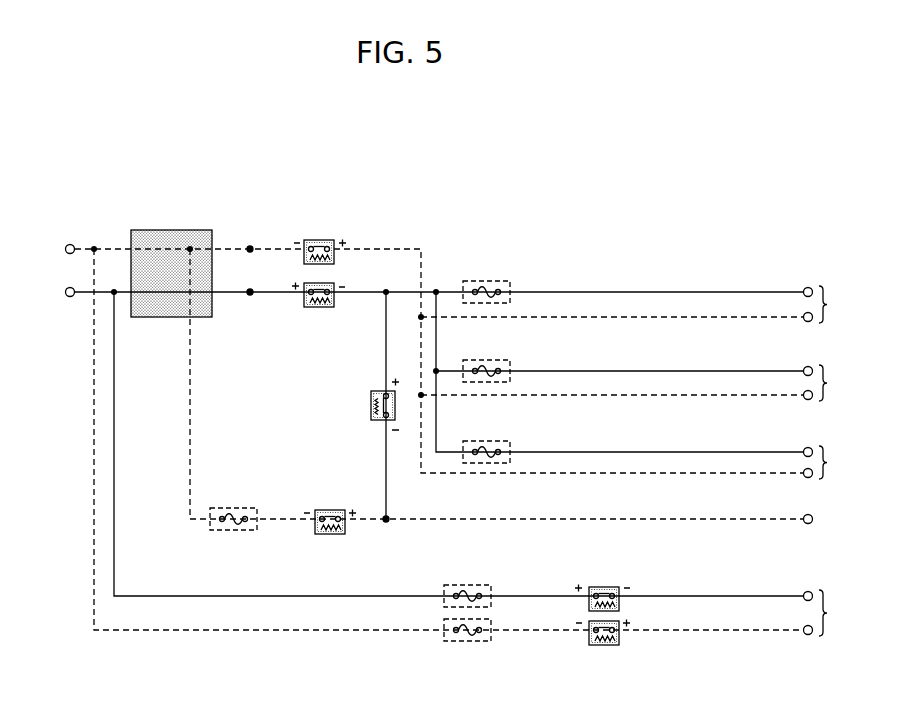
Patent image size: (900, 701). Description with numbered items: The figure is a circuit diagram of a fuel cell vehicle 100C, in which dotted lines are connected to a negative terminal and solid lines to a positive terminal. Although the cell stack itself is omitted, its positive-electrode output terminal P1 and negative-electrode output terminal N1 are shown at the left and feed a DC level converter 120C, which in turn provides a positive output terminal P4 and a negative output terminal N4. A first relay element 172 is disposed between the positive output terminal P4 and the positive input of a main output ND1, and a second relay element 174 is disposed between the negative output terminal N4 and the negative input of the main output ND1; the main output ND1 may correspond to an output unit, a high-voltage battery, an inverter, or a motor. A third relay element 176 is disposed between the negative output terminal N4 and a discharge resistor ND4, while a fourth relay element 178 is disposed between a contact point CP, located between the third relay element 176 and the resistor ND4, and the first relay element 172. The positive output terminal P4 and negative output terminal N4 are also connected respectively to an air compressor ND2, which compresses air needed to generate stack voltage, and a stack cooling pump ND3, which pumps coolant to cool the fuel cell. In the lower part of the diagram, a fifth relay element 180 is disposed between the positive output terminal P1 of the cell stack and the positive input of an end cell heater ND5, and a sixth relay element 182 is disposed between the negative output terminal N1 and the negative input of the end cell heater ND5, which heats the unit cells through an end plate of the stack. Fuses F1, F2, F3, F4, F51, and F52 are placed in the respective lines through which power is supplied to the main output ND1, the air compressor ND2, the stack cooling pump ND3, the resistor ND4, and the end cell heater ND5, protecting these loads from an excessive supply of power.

The fuel cell vehicle 100C is at (692, 148).
The DC level converter 120C is at (170, 230).
The first relay element 172 is at (322, 308).
The second relay element 174 is at (322, 240).
The third relay element 176 is at (328, 510).
The fourth relay element 178 is at (370, 403).
The fifth relay element 180 is at (601, 587).
The sixth relay element 182 is at (603, 647).
The fuse F1 is at (489, 281).
The fuse F2 is at (489, 360).
The fuse F3 is at (489, 441).
The fuse F4 is at (236, 507).
The fuse F51 is at (472, 584).
The fuse F52 is at (472, 646).
The output terminal of the negative-electrode side of the cell stack N1 is at (55, 249).
The output terminal of the positive-electrode side of the cell stack P1 is at (55, 292).
The negative output terminal of the DC level converter N4 is at (250, 237).
The positive output terminal of the DC level converter P4 is at (249, 304).
The contact point CP is at (385, 532).
The main output ND1 is at (839, 304).
The air compressor ND2 is at (839, 383).
The stack cooling pump ND3 is at (839, 462).
The discharge resistor ND4 is at (835, 519).
The end cell heater ND5 is at (839, 613).